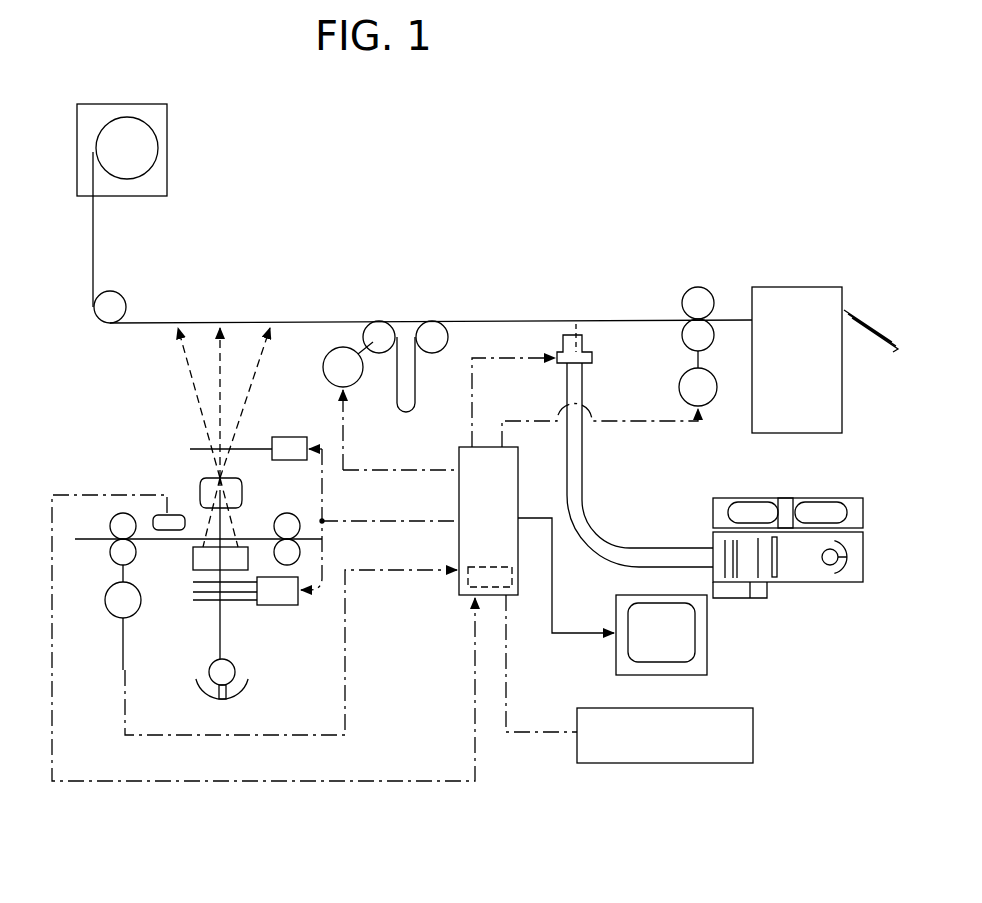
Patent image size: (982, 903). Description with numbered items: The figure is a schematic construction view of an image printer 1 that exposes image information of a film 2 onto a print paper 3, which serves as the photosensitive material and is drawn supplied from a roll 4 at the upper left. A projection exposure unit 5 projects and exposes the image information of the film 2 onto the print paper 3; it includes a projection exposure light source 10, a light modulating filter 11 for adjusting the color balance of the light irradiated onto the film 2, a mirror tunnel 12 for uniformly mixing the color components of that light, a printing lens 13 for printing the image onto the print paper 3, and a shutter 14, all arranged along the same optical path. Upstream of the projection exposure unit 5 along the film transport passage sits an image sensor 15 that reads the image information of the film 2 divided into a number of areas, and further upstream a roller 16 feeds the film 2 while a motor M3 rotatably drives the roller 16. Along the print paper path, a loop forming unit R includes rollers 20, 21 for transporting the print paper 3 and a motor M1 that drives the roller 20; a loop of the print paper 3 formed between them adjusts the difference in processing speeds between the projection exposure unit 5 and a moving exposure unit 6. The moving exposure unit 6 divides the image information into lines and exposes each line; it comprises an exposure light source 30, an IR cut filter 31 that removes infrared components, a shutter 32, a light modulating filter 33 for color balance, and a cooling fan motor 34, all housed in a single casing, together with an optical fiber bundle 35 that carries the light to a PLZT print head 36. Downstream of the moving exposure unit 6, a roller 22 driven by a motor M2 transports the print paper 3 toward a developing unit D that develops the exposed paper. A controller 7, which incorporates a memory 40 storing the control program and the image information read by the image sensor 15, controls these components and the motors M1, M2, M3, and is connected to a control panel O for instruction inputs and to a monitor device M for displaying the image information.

The image printer 1 is at (462, 218).
The film 2 is at (95, 541).
The print paper 3 is at (93, 262).
The supply roll of photosensitive web 4 is at (167, 162).
The projection exposure unit 5 is at (185, 701).
The moving exposure unit 6 is at (577, 320).
The controller 7 is at (459, 462).
The projection exposure light source 10 is at (208, 670).
The light modulating filter 11 is at (246, 608).
The mirror tunnel 12 is at (193, 567).
The printing lens 13 is at (200, 490).
The shutter 14 is at (190, 448).
The image sensor 15 is at (163, 528).
The roller 16 is at (113, 515).
The roller 20 is at (379, 321).
The roller 21 is at (438, 327).
The roller 22 is at (683, 318).
The exposure light source 30 is at (820, 568).
The IR cut filter 31 is at (780, 565).
The shutter 32 is at (758, 560).
The light modulating filter 33 is at (718, 543).
The cooling fan motor 34 is at (833, 502).
The optical fiber bundle 35 is at (583, 494).
The PLZT print head 36 is at (592, 356).
The memory 40 is at (468, 583).
The motor M1 is at (329, 353).
The motor M2 is at (705, 394).
The motor M3 is at (108, 618).
The loop forming unit R is at (407, 320).
The developing unit D is at (797, 287).
The monitor device M is at (616, 663).
The control panel O is at (753, 737).